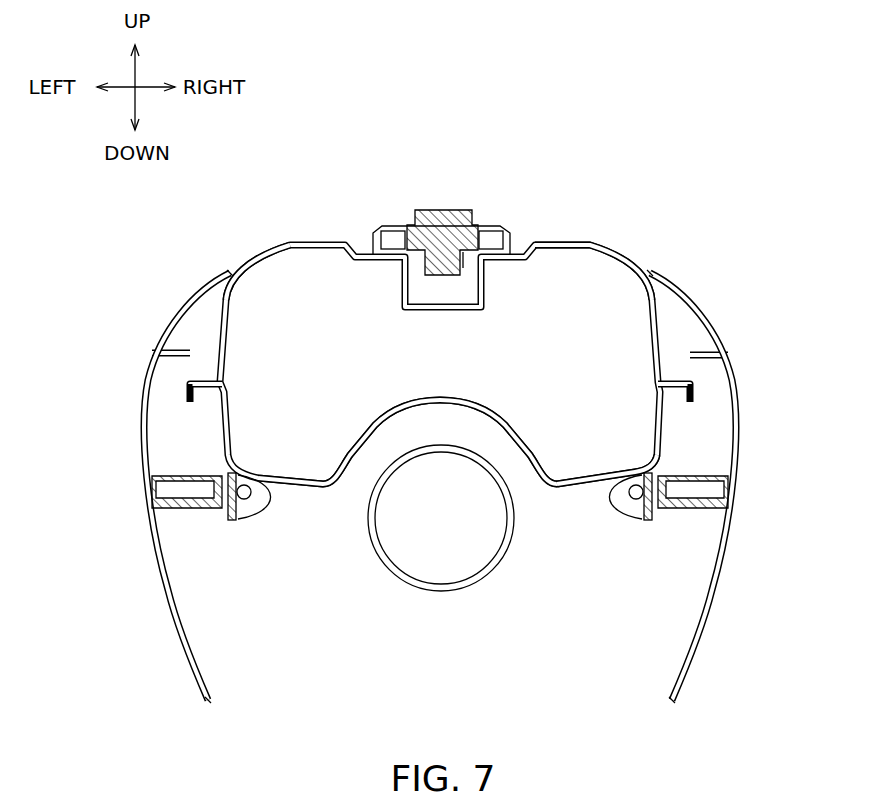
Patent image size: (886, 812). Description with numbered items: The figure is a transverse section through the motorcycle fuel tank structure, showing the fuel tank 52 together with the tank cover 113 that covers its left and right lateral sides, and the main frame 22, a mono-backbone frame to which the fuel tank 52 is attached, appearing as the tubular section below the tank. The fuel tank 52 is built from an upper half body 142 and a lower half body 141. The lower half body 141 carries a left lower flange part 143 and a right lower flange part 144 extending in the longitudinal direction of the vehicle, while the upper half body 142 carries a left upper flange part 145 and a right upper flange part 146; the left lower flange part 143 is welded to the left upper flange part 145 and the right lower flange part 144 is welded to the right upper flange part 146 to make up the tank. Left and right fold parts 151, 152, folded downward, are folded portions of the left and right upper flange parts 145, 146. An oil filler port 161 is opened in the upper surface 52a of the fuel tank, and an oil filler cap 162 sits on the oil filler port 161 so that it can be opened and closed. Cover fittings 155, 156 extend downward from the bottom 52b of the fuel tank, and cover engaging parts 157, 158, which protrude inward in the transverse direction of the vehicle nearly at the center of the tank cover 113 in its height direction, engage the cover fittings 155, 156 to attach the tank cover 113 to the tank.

The main frame 22 is at (490, 577).
The fuel tank 52 is at (604, 238).
The upper surface of the fuel tank 52a is at (320, 240).
The bottom of the fuel tank 52b is at (318, 488).
The tank cover 113 is at (724, 301).
The lower half body of the fuel tank 141 is at (557, 488).
The upper half body of the fuel tank 142 is at (562, 243).
The left lower flange part 143 is at (198, 405).
The right lower flange part 144 is at (683, 402).
The left upper flange part 145 is at (198, 379).
The right upper flange part 146 is at (690, 375).
The left fold part 151 is at (188, 403).
The right fold part 152 is at (692, 403).
The cover fitting 155 is at (248, 511).
The cover fitting 156 is at (633, 509).
The cover engaging part 157 is at (211, 514).
The cover engaging part 158 is at (673, 514).
The oil filler port 161 is at (422, 270).
The oil filler cap 162 is at (440, 228).